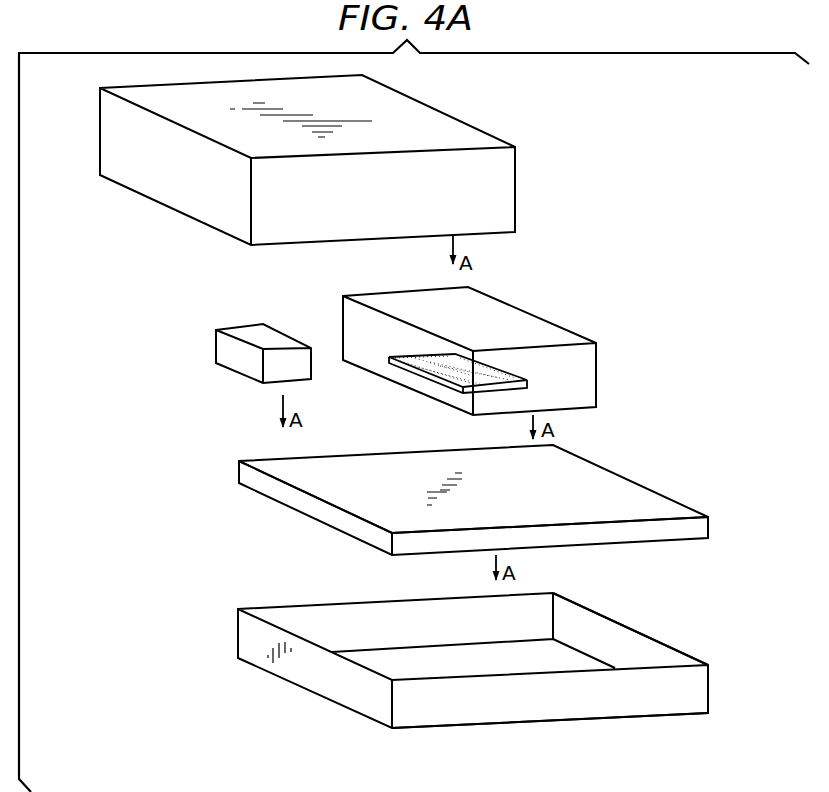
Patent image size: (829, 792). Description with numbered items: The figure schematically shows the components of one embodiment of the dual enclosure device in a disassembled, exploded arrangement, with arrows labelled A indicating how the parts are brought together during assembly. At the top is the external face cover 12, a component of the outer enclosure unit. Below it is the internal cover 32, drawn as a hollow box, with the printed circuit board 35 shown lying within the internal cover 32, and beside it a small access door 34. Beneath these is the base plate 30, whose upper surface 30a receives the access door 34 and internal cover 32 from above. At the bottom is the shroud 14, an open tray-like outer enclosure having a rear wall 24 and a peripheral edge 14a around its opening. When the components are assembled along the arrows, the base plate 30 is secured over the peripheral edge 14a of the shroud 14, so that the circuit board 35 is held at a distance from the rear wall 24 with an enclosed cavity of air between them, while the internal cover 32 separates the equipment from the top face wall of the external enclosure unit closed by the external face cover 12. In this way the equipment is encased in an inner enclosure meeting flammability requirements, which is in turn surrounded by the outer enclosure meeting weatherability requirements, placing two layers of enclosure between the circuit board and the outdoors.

The external face cover 12 is at (497, 192).
The shroud 14 is at (710, 680).
The peripheral edge 14a is at (614, 615).
The rear wall 24 is at (565, 728).
The base plate 30 is at (638, 495).
The base plate surface 30a is at (288, 466).
The internal cover 32 is at (565, 330).
The access door 34 is at (245, 360).
The printed circuit board 35 is at (518, 370).